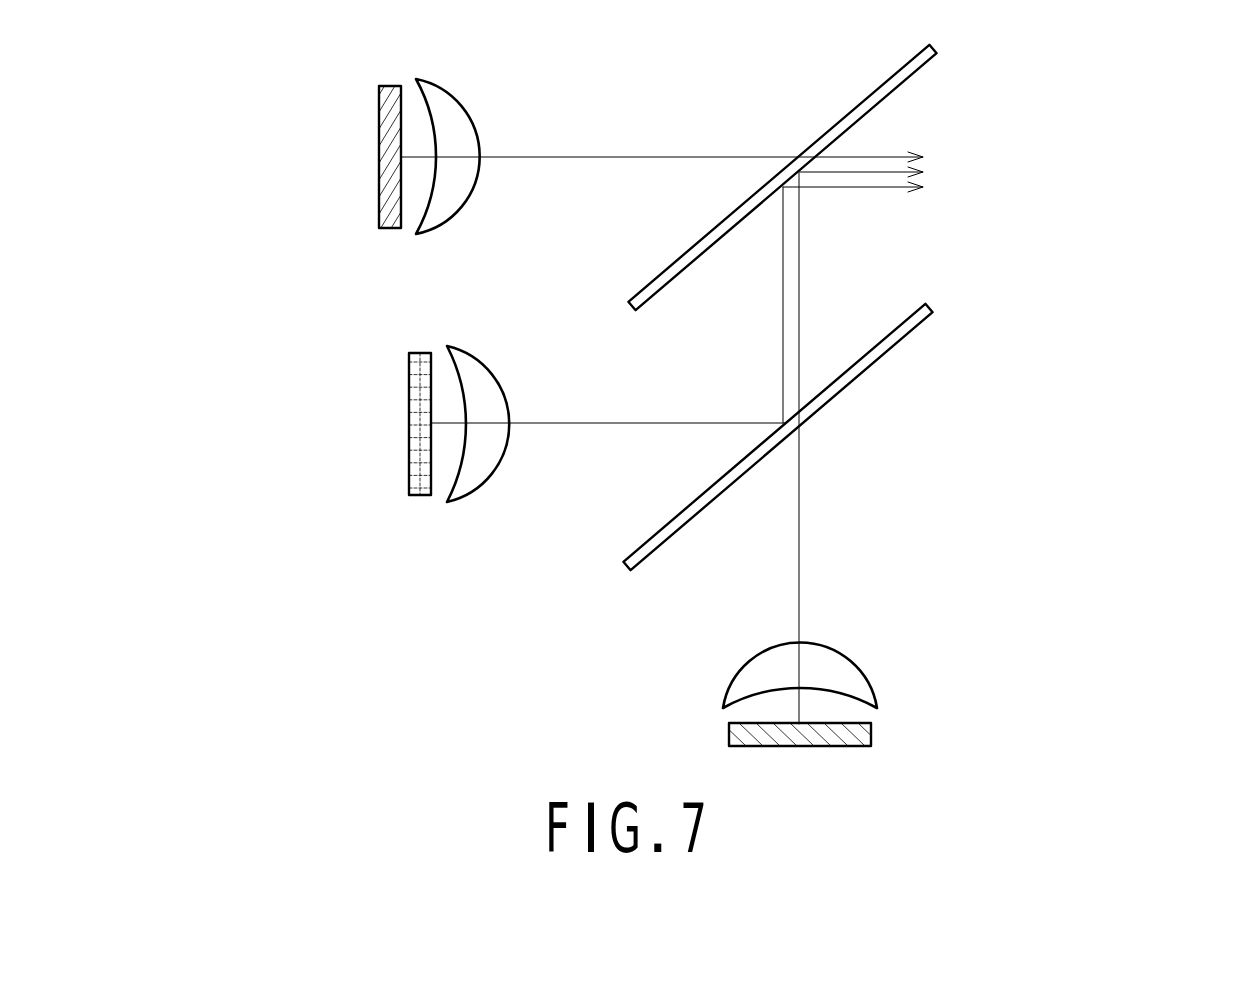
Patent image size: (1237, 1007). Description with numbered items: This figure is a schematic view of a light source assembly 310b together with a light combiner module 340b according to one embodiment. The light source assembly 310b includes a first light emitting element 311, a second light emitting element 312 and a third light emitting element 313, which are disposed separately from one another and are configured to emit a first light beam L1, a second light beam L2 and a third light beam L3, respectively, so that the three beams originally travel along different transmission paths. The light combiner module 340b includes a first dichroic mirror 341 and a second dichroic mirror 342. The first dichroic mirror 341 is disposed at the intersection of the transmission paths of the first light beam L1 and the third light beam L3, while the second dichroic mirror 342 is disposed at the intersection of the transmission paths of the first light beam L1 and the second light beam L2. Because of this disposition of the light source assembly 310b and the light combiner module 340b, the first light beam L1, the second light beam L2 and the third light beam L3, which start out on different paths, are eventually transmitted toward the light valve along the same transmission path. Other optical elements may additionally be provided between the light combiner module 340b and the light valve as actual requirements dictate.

The light source assembly 310b is at (241, 308).
The first light emitting element 311 is at (750, 733).
The second light emitting element 312 is at (420, 388).
The third light emitting element 313 is at (383, 212).
The light combiner module 340b is at (1096, 110).
The first dichroic mirror 341 is at (910, 70).
The second dichroic mirror 342 is at (920, 312).
The first light beam L1 is at (800, 495).
The second light beam L2 is at (650, 424).
The third light beam L3 is at (633, 157).